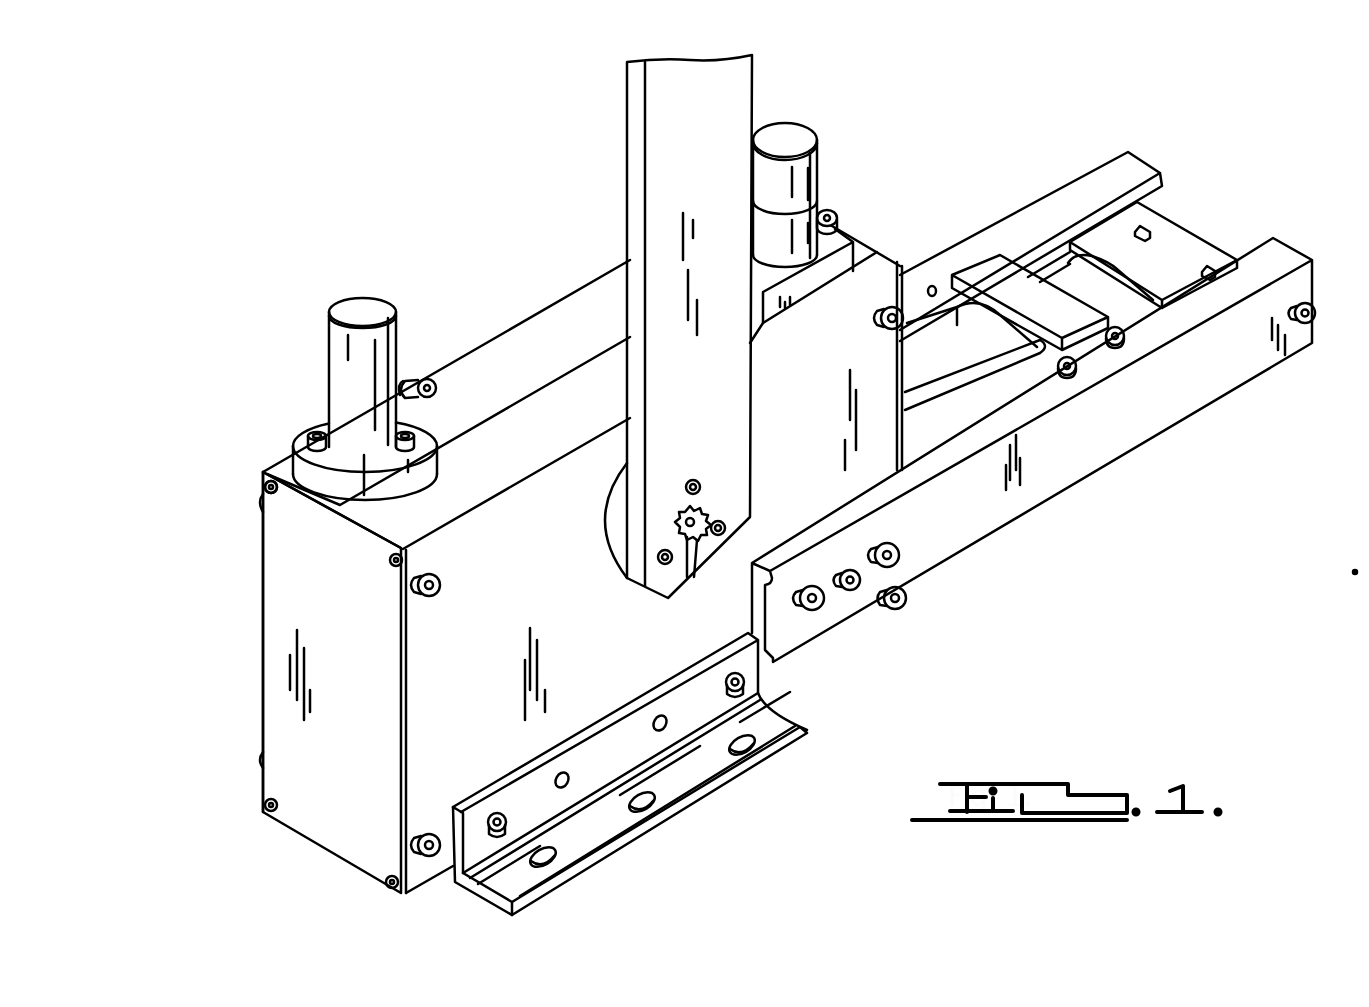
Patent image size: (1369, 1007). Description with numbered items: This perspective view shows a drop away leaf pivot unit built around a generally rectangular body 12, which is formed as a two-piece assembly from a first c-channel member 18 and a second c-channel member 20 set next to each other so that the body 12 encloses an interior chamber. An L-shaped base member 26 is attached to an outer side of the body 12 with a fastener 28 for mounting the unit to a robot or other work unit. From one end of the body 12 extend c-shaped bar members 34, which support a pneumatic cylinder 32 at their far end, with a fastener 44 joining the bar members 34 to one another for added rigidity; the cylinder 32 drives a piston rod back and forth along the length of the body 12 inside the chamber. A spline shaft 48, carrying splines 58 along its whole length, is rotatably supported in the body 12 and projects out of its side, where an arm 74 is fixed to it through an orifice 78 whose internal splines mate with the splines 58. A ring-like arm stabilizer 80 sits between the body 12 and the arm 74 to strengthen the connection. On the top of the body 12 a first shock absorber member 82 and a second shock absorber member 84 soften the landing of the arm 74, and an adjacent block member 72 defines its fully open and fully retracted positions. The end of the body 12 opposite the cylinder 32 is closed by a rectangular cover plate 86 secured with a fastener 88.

The body 12 is at (518, 340).
The first c-channel member 18 is at (453, 698).
The second c-channel member 20 is at (573, 303).
The base member 26 is at (775, 713).
The fastener 28 is at (762, 694).
The cylinder 32 is at (945, 358).
The bar member 34 is at (1013, 235).
The fastener 44 is at (1178, 235).
The spline shaft 48 is at (688, 532).
The splines 58 is at (678, 514).
The block member 72 is at (428, 390).
The arm 74 is at (675, 125).
The orifice 78 is at (707, 503).
The arm stabilizer 80 is at (607, 520).
The first shock absorber member 82 is at (808, 178).
The second shock absorber member 84 is at (330, 342).
The cover plate 86 is at (280, 566).
The fastener 88 is at (265, 478).